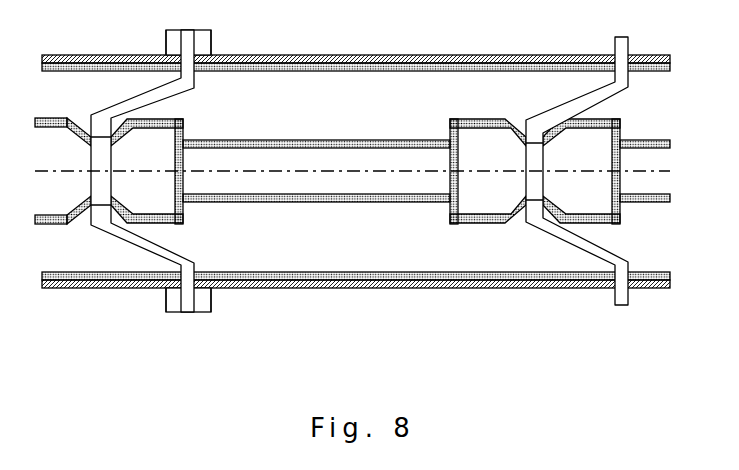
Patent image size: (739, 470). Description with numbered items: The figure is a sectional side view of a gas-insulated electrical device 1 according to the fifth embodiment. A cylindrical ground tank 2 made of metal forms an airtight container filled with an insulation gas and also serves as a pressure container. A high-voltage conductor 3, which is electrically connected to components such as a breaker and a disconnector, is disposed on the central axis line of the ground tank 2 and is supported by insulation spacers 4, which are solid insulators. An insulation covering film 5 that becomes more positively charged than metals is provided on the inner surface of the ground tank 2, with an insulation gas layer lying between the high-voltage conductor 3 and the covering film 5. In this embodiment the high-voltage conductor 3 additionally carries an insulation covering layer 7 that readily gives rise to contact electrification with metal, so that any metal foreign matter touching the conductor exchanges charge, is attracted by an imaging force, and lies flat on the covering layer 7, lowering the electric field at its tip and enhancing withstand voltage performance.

The gas-insulated electrical device 1 is at (589, 305).
The ground tank 2 is at (405, 285).
The high-voltage conductor 3 is at (343, 150).
The insulation spacer 4 is at (607, 250).
The insulation covering film 5 is at (468, 277).
The insulation covering layer 7 is at (277, 140).